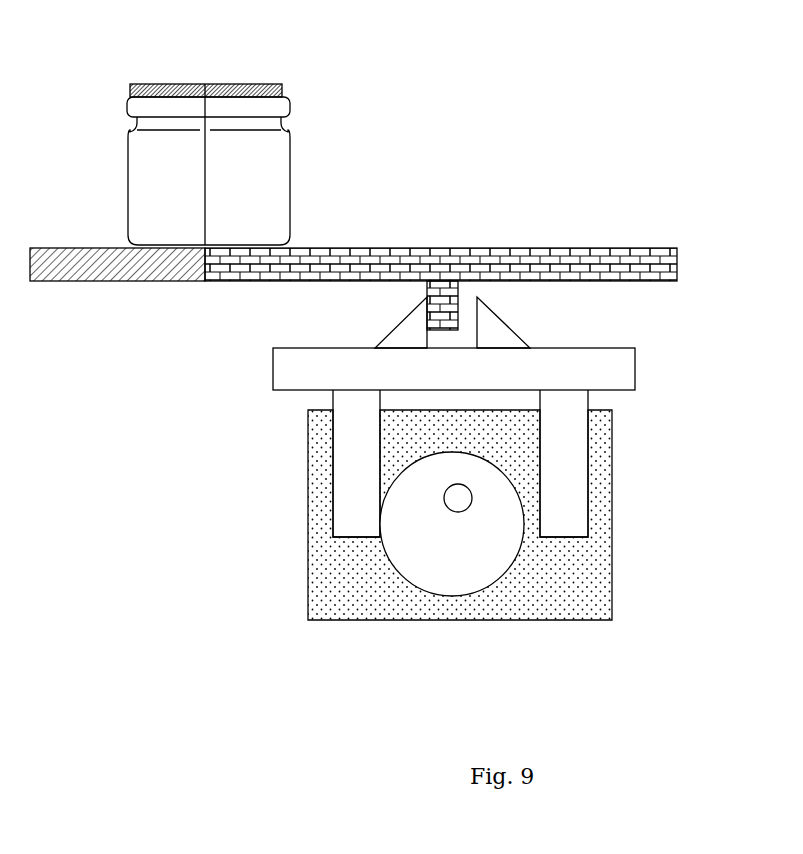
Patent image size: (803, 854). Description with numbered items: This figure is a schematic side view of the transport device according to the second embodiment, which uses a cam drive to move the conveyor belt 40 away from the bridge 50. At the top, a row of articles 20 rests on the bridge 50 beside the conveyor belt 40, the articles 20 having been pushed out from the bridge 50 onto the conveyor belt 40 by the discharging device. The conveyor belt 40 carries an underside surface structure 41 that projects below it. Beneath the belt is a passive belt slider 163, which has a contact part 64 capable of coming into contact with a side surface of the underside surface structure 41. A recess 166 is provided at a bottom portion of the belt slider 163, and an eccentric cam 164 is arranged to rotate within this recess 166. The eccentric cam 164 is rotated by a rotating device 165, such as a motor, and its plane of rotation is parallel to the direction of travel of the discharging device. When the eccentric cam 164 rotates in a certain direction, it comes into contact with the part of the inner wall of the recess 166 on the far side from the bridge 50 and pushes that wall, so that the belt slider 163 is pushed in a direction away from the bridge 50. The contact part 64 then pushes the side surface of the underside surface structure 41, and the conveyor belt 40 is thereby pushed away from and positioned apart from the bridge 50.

The articles 20 is at (260, 80).
The conveyor belt 40 is at (640, 248).
The underside surface structure 41 is at (444, 288).
The bridge 50 is at (83, 264).
The contact part 64 is at (405, 318).
The belt slider 163 is at (273, 378).
The eccentric cam 164 is at (452, 580).
The rotating device 165 is at (575, 600).
The recess 166 is at (497, 402).